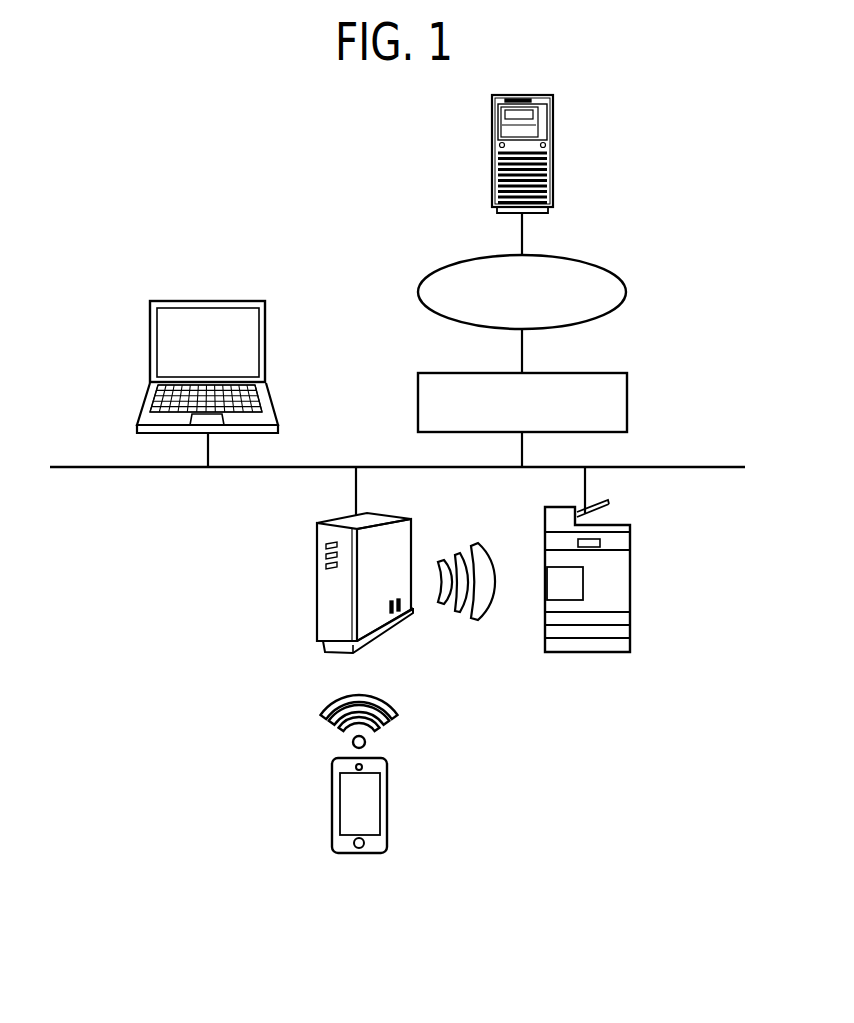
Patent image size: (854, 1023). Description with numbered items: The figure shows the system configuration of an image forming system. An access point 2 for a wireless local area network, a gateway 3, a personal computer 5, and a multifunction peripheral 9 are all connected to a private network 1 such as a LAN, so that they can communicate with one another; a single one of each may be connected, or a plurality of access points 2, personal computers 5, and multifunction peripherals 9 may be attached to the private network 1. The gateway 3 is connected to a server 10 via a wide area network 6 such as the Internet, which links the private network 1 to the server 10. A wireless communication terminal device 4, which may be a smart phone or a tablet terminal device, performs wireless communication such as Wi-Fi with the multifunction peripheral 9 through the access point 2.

The private network 1 is at (704, 466).
The access point 2 is at (317, 577).
The gateway 3 is at (627, 400).
The wireless communication terminal device 4 is at (332, 800).
The personal computer 5 is at (150, 348).
The wide area network 6 is at (627, 290).
The multifunction peripheral 9 is at (617, 585).
The server 10 is at (553, 152).